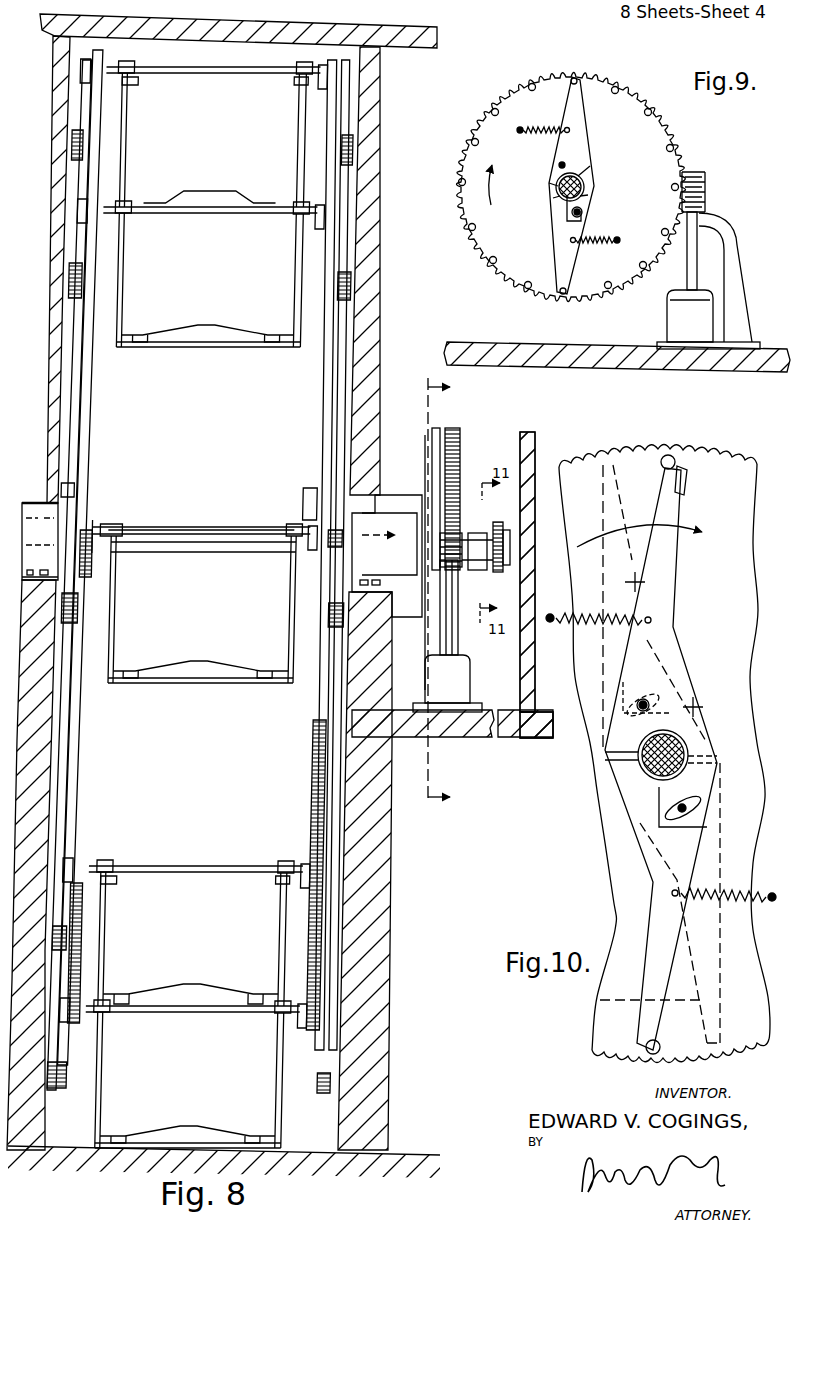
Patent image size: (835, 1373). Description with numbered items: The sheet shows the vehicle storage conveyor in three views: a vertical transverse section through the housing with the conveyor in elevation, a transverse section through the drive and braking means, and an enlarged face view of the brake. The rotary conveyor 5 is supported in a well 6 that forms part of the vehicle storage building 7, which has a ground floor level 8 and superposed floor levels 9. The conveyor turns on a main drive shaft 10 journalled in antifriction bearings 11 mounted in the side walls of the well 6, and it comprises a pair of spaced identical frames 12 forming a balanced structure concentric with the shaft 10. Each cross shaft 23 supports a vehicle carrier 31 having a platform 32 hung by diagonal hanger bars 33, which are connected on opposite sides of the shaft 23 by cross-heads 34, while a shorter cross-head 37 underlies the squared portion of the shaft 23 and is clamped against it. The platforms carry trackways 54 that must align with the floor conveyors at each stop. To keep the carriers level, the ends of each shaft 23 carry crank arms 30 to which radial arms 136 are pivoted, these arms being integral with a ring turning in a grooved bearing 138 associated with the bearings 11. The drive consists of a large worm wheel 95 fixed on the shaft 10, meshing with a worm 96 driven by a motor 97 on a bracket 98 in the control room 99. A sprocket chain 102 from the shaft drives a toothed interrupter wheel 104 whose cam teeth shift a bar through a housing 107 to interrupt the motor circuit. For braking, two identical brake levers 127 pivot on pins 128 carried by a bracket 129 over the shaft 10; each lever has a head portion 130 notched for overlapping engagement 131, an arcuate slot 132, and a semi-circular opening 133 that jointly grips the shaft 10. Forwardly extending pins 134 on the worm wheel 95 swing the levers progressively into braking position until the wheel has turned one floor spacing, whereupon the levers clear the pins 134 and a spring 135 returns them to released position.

In FIG. 8, the rotary conveyor 5 is at (326, 449).
In FIG. 8, the well 6 is at (283, 377).
In FIG. 8, the vehicle storage building 7 is at (414, 49).
In FIG. 8, the ground floor level 8 is at (302, 1153).
In FIG. 8, the superposed floor levels 9 is at (447, 592).
In FIG. 8, the main drive shaft 10 is at (212, 528).
In FIG. 9, the main drive shaft 10 is at (585, 187).
In FIG. 10, the main drive shaft 10 is at (637, 749).
In FIG. 8, the antifriction bearings 11 is at (29, 503).
In FIG. 8, the frames 12 is at (100, 793).
In FIG. 8, the shaft 23 is at (215, 76).
In FIG. 8, the crank arms 30 is at (92, 121).
In FIG. 8, the vehicle carrier 31 is at (213, 196).
In FIG. 8, the platform 32 is at (212, 300).
In FIG. 8, the diagonal hanger bars 33 is at (130, 150).
In FIG. 8, the cross-heads 34 is at (137, 65).
In FIG. 8, the shorter cross-head 37 is at (140, 85).
In FIG. 8, the platform trackways 54 is at (148, 330).
In FIG. 8, the worm wheel 95 is at (462, 446).
In FIG. 9, the worm wheel 95 is at (473, 254).
In FIG. 10, the worm wheel 95 is at (628, 919).
In FIG. 8, the worm 96 is at (470, 517).
In FIG. 9, the worm 96 is at (707, 184).
In FIG. 8, the motor 97 is at (466, 669).
In FIG. 9, the motor 97 is at (690, 316).
In FIG. 8, the bracket 98 is at (458, 638).
In FIG. 9, the bracket 98 is at (736, 266).
In FIG. 8, the control room 99 is at (497, 678).
In FIG. 8, the sprocket chain 102 is at (500, 504).
In FIG. 8, the toothed interrupter wheel 104 is at (532, 488).
In FIG. 10, the toothed interrupter wheel 104 is at (534, 492).
In FIG. 8, the housing 107 is at (512, 540).
In FIG. 10, the housing 107 is at (536, 516).
In FIG. 8, the brake levers 127 is at (427, 447).
In FIG. 9, the brake levers 127 is at (578, 133).
In FIG. 10, the brake levers 127 is at (675, 592).
In FIG. 8, the pins 128 is at (420, 506).
In FIG. 9, the pins 128 is at (559, 165).
In FIG. 10, the pins 128 is at (656, 697).
In FIG. 8, the bracket 129 is at (418, 486).
In FIG. 9, the head portion 130 is at (553, 198).
In FIG. 10, the head portion 130 is at (683, 710).
In FIG. 9, the overlapping notched engagement 131 is at (548, 184).
In FIG. 10, the overlapping notched engagement 131 is at (605, 768).
In FIG. 9, the arcuate slot 132 is at (583, 212).
In FIG. 10, the arcuate slot 132 is at (625, 705).
In FIG. 9, the semi-circular opening 133 is at (585, 177).
In FIG. 10, the semi-circular opening 133 is at (648, 782).
In FIG. 9, the forwardly extending pins 134 is at (666, 228).
In FIG. 10, the forwardly extending pins 134 is at (688, 449).
In FIG. 9, the spring 135 is at (544, 129).
In FIG. 10, the spring 135 is at (556, 622).
In FIG. 8, the radial arms 136 is at (92, 398).
In FIG. 8, the grooved bearing 138 is at (88, 493).